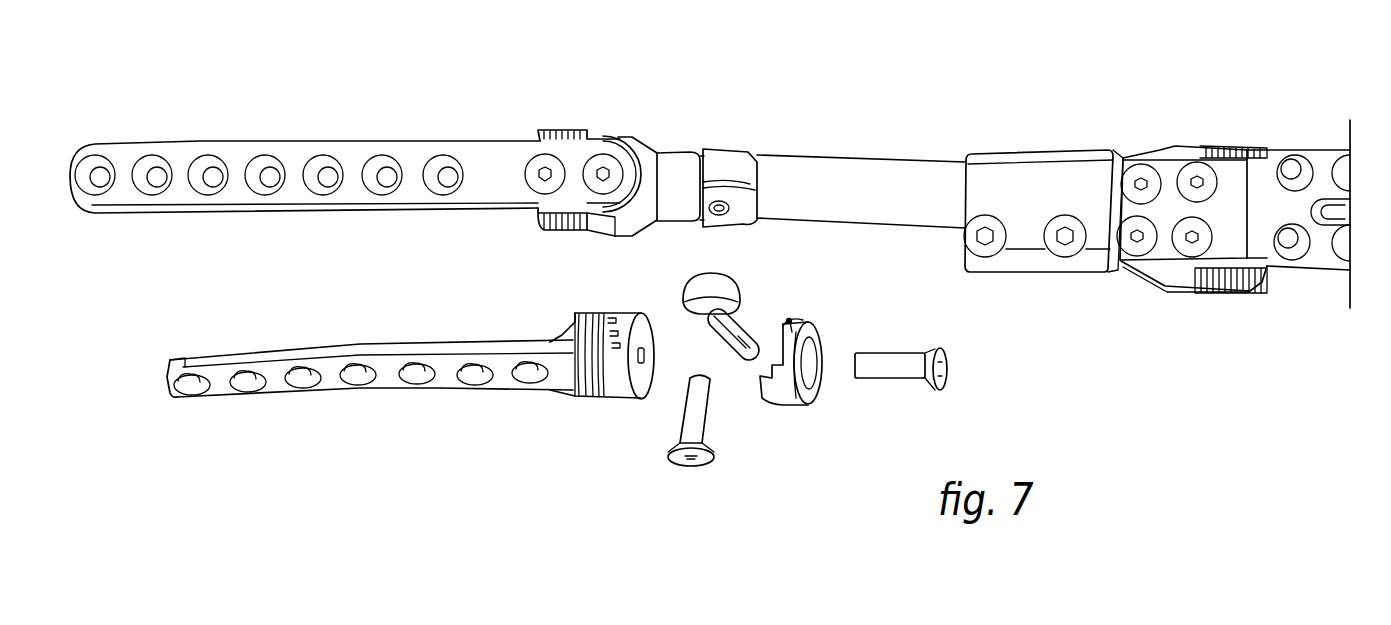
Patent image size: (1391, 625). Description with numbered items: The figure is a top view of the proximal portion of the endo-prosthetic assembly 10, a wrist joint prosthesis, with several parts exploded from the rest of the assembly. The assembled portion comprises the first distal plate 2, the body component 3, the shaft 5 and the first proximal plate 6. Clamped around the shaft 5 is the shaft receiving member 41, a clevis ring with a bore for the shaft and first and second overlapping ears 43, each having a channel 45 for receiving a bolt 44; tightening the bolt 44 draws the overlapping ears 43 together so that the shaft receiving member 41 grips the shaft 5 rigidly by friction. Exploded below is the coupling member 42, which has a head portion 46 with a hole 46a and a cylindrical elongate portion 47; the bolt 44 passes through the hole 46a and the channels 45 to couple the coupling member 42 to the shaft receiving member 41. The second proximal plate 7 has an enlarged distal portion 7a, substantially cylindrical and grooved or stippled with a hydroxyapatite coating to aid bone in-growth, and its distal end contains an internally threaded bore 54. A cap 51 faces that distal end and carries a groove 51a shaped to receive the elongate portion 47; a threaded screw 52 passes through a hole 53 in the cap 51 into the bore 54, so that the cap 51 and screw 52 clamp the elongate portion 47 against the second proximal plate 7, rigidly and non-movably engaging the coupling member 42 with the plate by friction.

The endo-prosthetic assembly 10 is at (840, 56).
The first proximal plate 6 is at (357, 165).
The overlapping ears 43 is at (707, 171).
The shaft receiving member 41 is at (755, 147).
The channel 45 is at (722, 212).
The shaft 5 is at (865, 185).
The body component 3 is at (1033, 193).
The first distal plate 2 is at (1324, 163).
The second proximal plate 7 is at (395, 380).
The enlarged distal portion 7a is at (618, 397).
The bore 54 is at (645, 363).
The head portion 46 is at (692, 292).
The hole 46a is at (704, 312).
The coupling member 42 is at (754, 306).
The elongate portion 47 is at (745, 333).
The bolt 44 is at (702, 432).
The cap 51 is at (780, 398).
The groove 51a is at (800, 330).
The hole 53 is at (814, 368).
The screw 52 is at (902, 366).